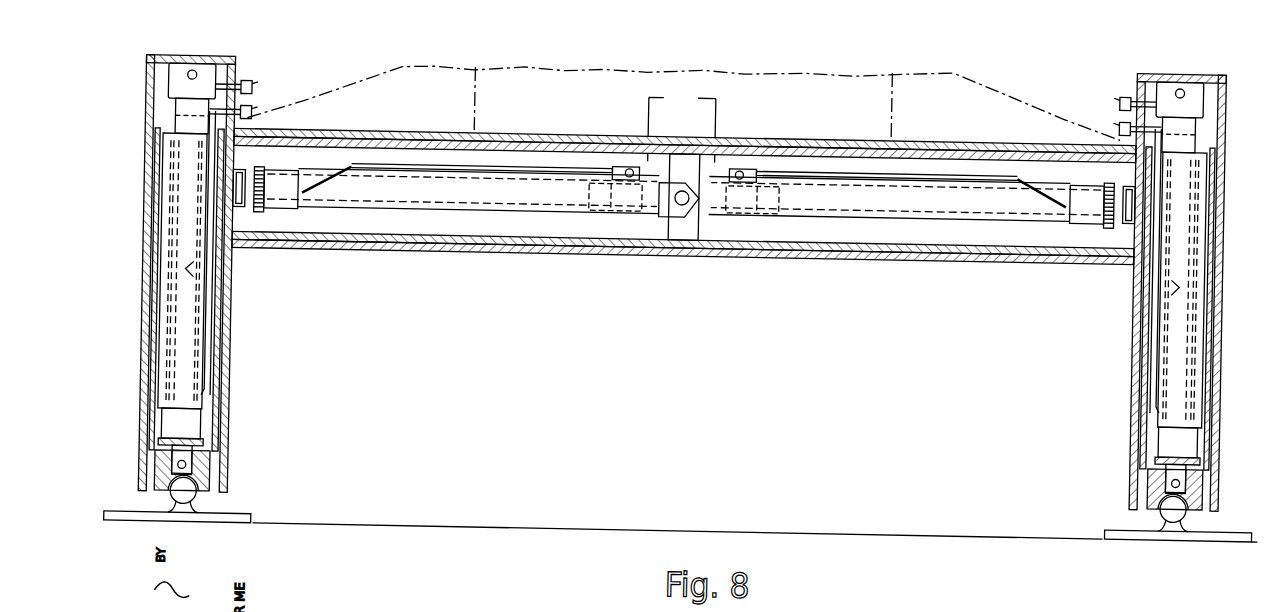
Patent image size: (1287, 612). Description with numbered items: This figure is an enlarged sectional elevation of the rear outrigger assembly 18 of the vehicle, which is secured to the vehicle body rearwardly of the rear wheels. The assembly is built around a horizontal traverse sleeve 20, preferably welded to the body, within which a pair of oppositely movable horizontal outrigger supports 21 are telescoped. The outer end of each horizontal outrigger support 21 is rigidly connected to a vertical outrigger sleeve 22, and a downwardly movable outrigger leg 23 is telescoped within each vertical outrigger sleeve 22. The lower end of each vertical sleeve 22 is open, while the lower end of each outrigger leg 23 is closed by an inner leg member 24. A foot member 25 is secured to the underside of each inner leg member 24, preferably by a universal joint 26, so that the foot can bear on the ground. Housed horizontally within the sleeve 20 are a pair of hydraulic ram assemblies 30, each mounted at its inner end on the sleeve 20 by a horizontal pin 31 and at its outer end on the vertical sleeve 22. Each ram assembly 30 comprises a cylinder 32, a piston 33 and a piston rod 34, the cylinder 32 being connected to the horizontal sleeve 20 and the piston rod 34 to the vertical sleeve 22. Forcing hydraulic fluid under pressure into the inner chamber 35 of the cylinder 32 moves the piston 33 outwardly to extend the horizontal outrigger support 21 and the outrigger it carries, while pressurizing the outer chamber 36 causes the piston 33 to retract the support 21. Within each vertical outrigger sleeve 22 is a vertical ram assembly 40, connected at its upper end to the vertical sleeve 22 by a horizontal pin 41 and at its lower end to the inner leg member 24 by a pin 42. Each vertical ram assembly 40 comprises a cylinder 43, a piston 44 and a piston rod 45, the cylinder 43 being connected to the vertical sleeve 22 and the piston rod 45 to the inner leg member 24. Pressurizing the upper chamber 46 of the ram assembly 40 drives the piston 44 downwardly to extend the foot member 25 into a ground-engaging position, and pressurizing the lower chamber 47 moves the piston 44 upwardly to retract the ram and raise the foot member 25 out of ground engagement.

The rear outrigger assembly 18 is at (144, 220).
The traverse sleeve 20 is at (686, 258).
The horizontal outrigger support 21 is at (477, 240).
The vertical outrigger sleeve 22 is at (228, 367).
The outrigger leg 23 is at (210, 311).
The inner leg member 24 is at (206, 477).
The foot member 25 is at (251, 523).
The universal joint 26 is at (194, 504).
The hydraulic ram assembly 30 is at (682, 126).
The horizontal pin 31 is at (675, 202).
The cylinder 32 is at (408, 217).
The piston 33 is at (593, 205).
The piston rod 34 is at (366, 199).
The inner chamber 35 is at (620, 204).
The outer chamber 36 is at (683, 230).
The vertical ram assembly 40 is at (187, 436).
The horizontal pin 41 is at (188, 80).
The pin 42 is at (183, 475).
The cylinder 43 is at (168, 367).
The piston 44 is at (182, 132).
The piston rod 45 is at (182, 250).
The upper chamber 46 is at (164, 110).
The lower chamber 47 is at (199, 273).